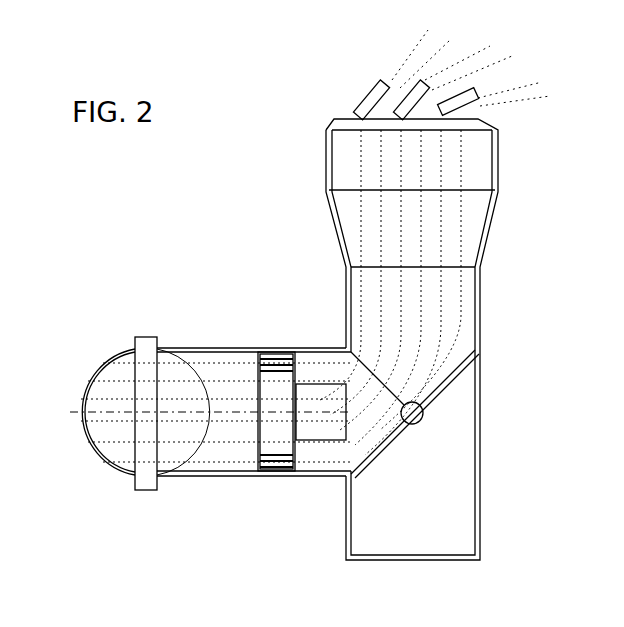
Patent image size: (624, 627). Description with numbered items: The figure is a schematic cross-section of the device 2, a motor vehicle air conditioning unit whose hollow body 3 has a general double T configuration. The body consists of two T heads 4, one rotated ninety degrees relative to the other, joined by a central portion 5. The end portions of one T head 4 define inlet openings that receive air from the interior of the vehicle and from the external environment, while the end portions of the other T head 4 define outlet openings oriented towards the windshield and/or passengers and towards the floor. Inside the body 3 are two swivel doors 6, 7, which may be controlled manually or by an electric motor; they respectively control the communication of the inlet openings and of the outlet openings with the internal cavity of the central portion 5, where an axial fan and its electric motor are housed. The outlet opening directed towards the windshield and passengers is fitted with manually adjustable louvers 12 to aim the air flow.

The device 2 is at (135, 262).
The hollow body 3 is at (208, 482).
The T head 4 is at (92, 457).
The central portion 5 is at (215, 348).
The swivel door 6 is at (128, 390).
The swivel door 7 is at (452, 378).
The louvers 12 is at (448, 96).